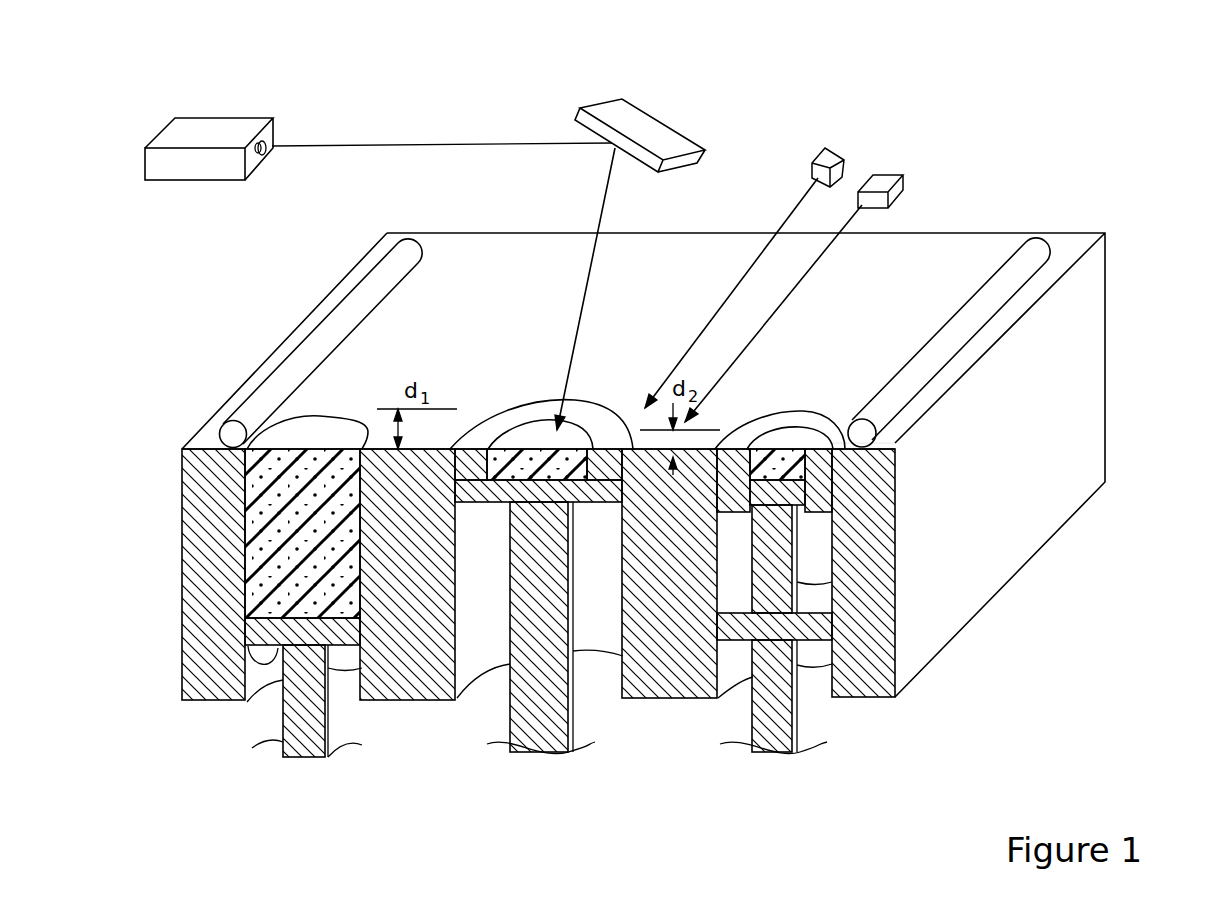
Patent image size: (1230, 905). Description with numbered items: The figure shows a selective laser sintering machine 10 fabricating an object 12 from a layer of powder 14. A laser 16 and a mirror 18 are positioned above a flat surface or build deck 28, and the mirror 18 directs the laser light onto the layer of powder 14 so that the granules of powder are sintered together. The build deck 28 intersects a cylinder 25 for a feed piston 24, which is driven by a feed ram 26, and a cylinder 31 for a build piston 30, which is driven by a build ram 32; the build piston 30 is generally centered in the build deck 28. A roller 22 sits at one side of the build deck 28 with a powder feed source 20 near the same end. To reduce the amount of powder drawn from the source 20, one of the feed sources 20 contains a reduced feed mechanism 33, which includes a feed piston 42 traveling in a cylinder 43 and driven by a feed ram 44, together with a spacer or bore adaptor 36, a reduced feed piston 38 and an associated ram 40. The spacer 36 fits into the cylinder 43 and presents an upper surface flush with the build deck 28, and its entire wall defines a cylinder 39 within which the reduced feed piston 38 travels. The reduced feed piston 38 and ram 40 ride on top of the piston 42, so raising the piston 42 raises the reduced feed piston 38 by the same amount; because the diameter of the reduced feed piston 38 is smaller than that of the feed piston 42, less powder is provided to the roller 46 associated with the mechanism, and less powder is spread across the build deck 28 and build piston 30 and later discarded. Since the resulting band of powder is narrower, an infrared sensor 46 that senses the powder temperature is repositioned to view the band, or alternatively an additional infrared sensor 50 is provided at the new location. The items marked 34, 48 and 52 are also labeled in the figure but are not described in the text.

The selective laser sintering machine 10 is at (795, 102).
The object 12 is at (575, 433).
The layer of powder 14 is at (545, 414).
The laser 16 is at (213, 126).
The mirror 18 is at (660, 132).
The powder feed source 20 is at (283, 512).
The roller 22 is at (278, 381).
The feed piston 24 is at (262, 670).
The cylinder 25 is at (247, 475).
The feed ram 26 is at (312, 740).
The build deck 28 is at (664, 351).
The build piston 30 is at (597, 503).
The cylinder 31 is at (455, 677).
The build ram 32 is at (505, 700).
The reduced feed mechanism 33 is at (793, 390).
The top surface 34 is at (842, 434).
The spacer 36 is at (840, 482).
The reduced feed piston 38 is at (752, 593).
The cylinder 39 is at (753, 447).
The ram 40 is at (833, 574).
The feed piston 42 is at (813, 643).
The cylinder 43 is at (837, 527).
The feed ram 44 is at (770, 747).
The infrared sensor 46 is at (831, 152).
The sensor beam 48 is at (793, 208).
The additional infrared sensor 50 is at (902, 187).
The detector beam 52 is at (817, 263).